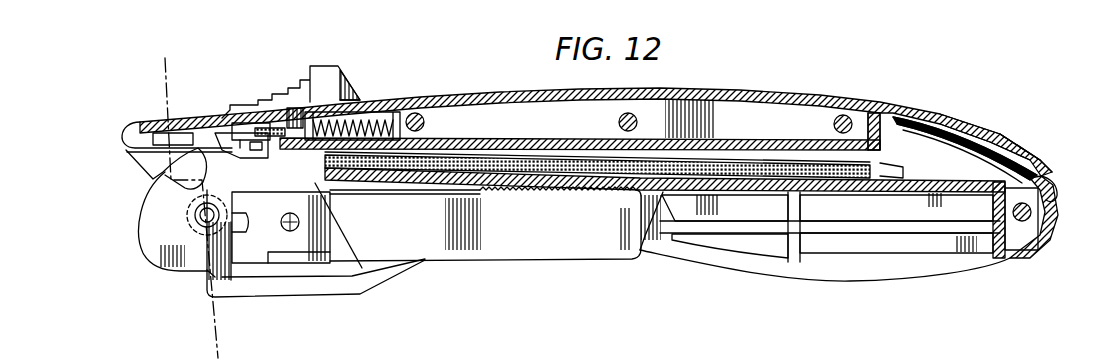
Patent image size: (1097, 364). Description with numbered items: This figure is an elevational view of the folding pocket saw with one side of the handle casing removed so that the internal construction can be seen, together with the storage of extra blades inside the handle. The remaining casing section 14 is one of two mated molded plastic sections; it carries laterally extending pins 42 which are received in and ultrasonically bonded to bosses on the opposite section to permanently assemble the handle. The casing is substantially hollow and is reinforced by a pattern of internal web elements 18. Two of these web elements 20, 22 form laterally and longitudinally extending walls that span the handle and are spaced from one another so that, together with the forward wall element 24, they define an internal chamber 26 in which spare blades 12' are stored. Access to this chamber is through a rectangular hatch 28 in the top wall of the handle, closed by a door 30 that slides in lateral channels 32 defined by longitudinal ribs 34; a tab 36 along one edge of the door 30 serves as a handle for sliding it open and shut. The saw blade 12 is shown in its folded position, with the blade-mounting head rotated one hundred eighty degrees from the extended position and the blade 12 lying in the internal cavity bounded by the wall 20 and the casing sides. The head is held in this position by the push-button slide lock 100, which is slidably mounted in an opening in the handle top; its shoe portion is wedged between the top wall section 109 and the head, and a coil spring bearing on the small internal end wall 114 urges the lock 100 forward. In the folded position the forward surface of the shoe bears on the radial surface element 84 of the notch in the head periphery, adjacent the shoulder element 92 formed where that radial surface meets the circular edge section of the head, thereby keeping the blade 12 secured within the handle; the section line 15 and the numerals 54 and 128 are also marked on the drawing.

The saw blade 12 is at (485, 247).
The spare blades 12' is at (919, 162).
The handle section 14 is at (937, 256).
The section line 15- 15 is at (192, 73).
The internal web elements 18 is at (792, 210).
The web element 20 is at (858, 190).
The web element 22 is at (740, 138).
The forward wall element 24 is at (274, 158).
The internal chamber 26 is at (542, 150).
The rectangular hatch 28 is at (965, 125).
The door 30 is at (1008, 131).
The lateral channels 32 is at (913, 116).
The longitudinal ribs 34 is at (919, 128).
The tab 36 is at (1050, 176).
The laterally extending pins 42 is at (426, 122).
The blade holder 54 is at (347, 231).
The radial surface element 84 is at (193, 207).
The shoulder element 92 is at (188, 166).
The push-button slide lock 100 is at (361, 207).
The top wall section 109 is at (221, 116).
The internal end wall 114 is at (406, 110).
The end lobe 128 is at (132, 156).